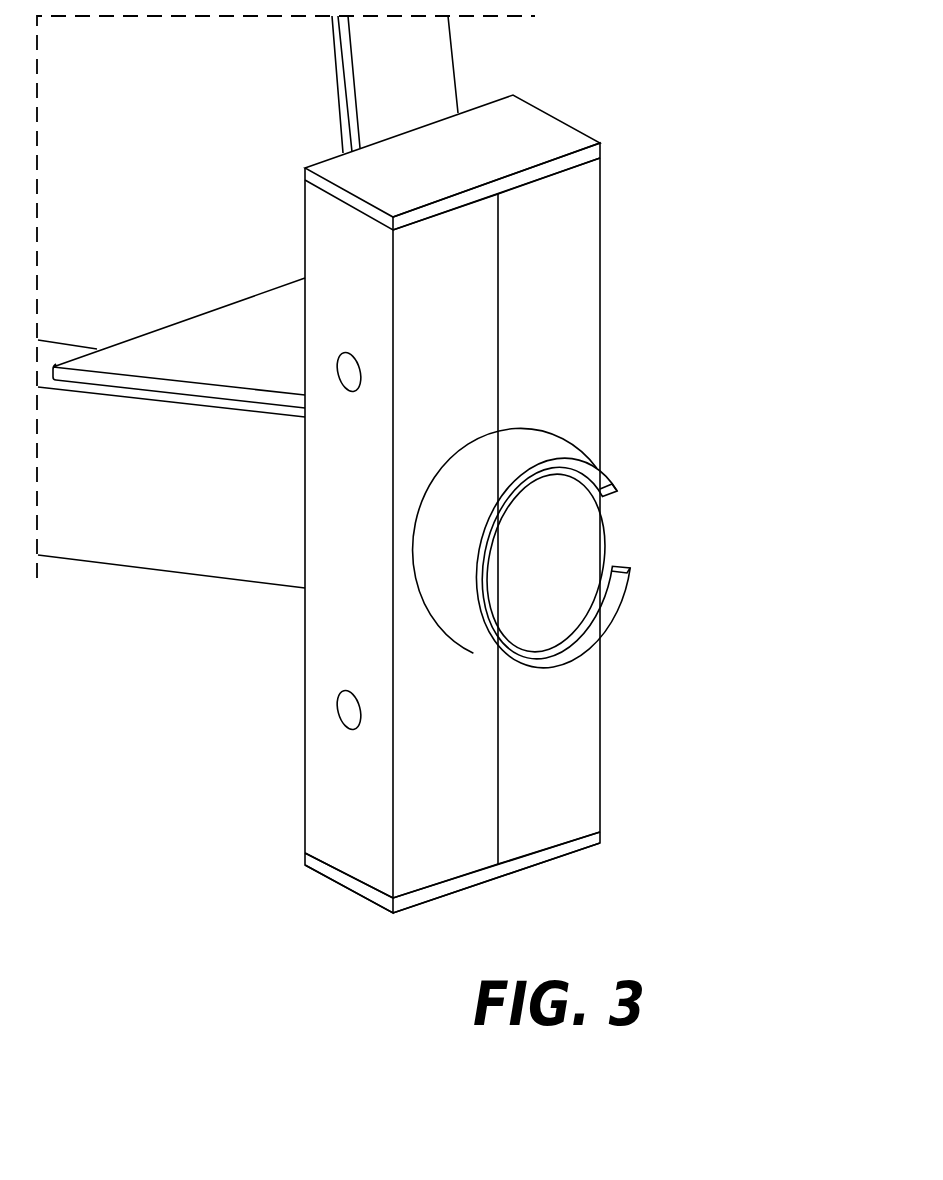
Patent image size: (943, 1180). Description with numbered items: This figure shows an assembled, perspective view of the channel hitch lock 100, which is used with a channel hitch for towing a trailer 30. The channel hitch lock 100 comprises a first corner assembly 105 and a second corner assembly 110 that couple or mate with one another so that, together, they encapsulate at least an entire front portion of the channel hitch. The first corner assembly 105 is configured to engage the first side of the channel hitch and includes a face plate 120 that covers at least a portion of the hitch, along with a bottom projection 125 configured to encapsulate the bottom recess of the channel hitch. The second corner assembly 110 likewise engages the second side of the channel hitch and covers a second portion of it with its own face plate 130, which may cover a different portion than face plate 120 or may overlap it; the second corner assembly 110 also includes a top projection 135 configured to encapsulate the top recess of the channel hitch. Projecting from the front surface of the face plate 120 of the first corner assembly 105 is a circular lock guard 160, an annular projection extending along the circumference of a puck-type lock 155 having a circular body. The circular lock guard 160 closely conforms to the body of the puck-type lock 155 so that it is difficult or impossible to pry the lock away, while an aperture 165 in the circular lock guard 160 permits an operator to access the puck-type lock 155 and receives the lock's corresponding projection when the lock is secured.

The trailer 30 is at (250, 337).
The channel hitch lock 100 is at (433, 518).
The first corner assembly 105 is at (345, 805).
The second corner assembly 110 is at (575, 330).
The face plate 120 is at (462, 784).
The bottom projection 125 is at (425, 902).
The face plate 130 is at (570, 763).
The top projection 135 is at (515, 132).
The puck-type lock 155 is at (560, 568).
The circular lock guard 160 is at (510, 462).
The aperture 165 is at (630, 545).